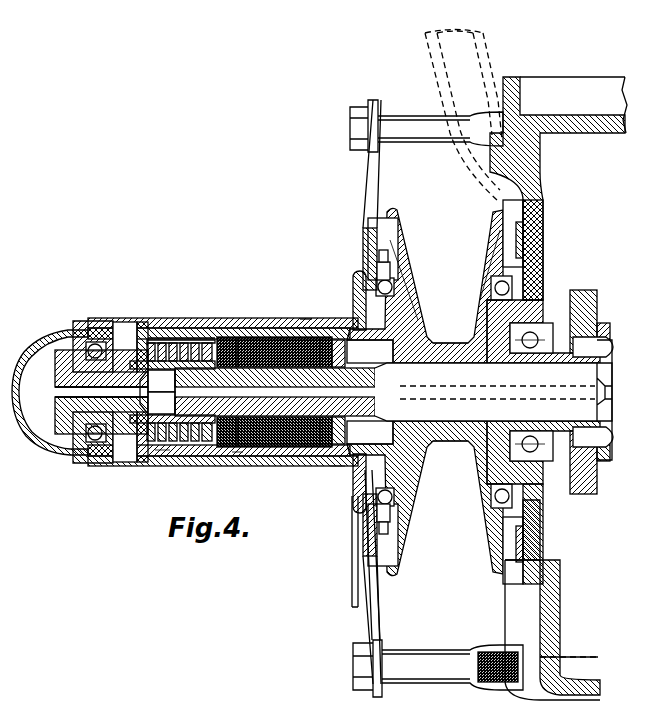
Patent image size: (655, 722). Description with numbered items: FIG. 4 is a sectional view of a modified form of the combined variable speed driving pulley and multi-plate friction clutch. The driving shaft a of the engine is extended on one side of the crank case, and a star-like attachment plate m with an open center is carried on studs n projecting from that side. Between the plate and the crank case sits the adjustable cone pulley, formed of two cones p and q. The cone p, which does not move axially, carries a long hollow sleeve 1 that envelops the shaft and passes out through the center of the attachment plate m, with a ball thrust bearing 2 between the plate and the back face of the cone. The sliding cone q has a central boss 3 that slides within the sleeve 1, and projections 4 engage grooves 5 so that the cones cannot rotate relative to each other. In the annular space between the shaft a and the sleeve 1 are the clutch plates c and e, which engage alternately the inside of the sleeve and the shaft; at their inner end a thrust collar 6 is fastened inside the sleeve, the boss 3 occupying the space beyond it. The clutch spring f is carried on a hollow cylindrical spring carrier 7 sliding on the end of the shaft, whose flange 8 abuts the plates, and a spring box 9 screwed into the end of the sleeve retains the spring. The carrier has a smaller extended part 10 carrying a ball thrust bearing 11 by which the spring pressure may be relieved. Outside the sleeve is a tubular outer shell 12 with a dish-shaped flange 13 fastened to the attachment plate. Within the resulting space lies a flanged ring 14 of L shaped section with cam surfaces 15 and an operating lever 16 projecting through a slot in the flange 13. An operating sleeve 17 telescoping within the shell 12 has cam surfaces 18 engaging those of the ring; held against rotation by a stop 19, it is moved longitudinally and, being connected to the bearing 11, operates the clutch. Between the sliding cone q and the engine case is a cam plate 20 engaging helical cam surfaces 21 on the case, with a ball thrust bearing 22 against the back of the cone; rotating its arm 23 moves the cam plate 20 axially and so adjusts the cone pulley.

The hollow sleeve 1 is at (266, 328).
The ball thrust bearing 2 is at (377, 272).
The central boss 3 is at (446, 345).
The projections 4 is at (440, 436).
The grooves 5 is at (416, 320).
The thrust collar 6 is at (348, 352).
The hollow cylindrical spring carrier 7 is at (215, 392).
The flange 8 is at (218, 340).
The spring box 9 is at (150, 336).
The extended part 10 is at (50, 430).
The ball thrust bearing 11 is at (88, 335).
The tubular outer shell 12 is at (198, 340).
The dish-shaped flange 13 is at (363, 250).
The flanged ring 14 is at (356, 318).
The cam surfaces 15 is at (330, 318).
The operating lever 16 is at (352, 575).
The operating sleeve 17 is at (125, 322).
The cam surfaces 18 is at (335, 466).
The stop 19 is at (305, 322).
The cam plate 20 is at (540, 255).
The cam surfaces 21 is at (540, 165).
The ball thrust bearing 22 is at (540, 280).
The arm 23 is at (440, 62).
The driving shaft a is at (493, 400).
The clutch plates c is at (237, 456).
The clutch plates e is at (250, 337).
The clutch spring f is at (160, 462).
The attachment plate m is at (376, 622).
The studs n is at (437, 656).
The cone p is at (398, 252).
The sliding cone q is at (492, 250).